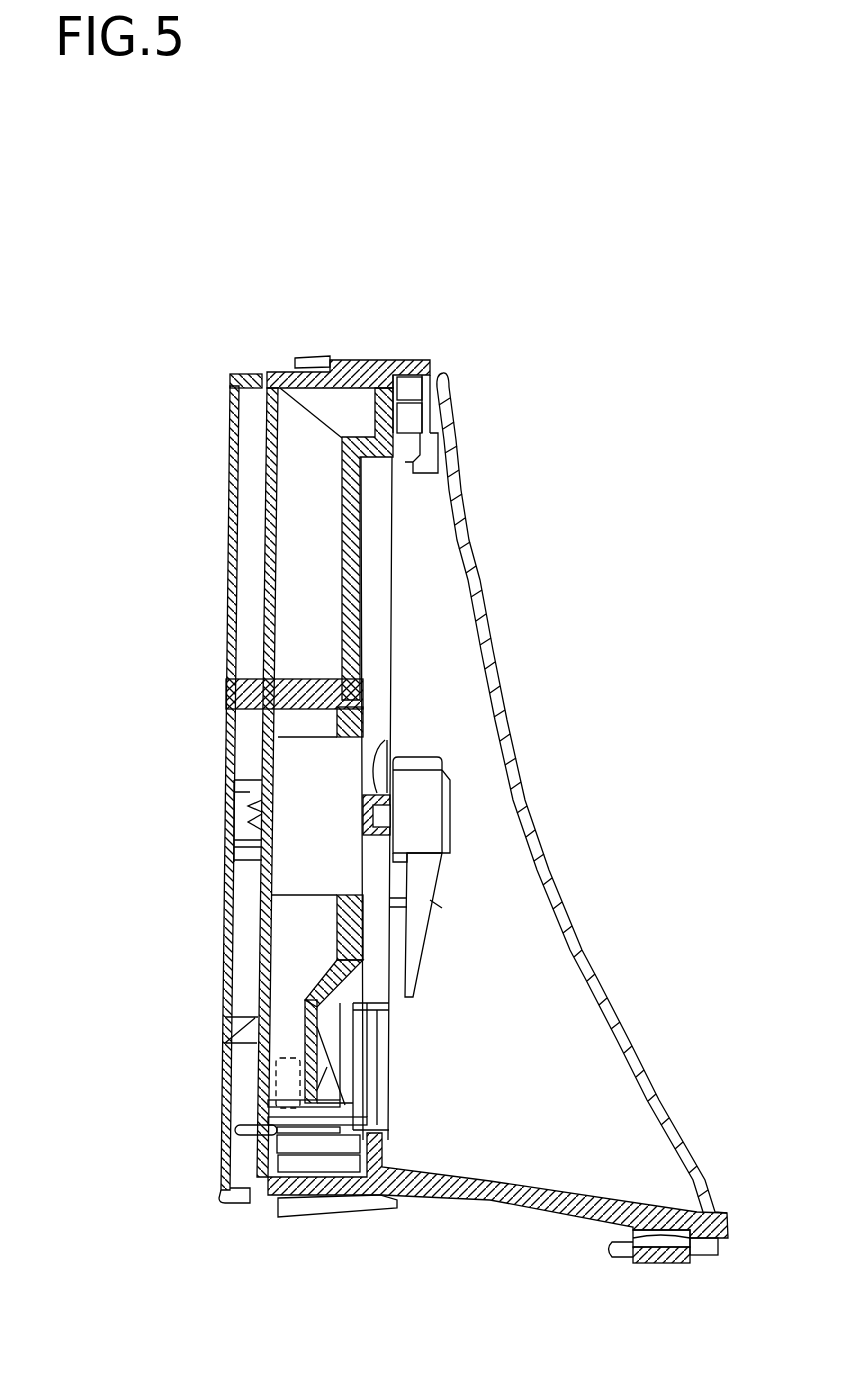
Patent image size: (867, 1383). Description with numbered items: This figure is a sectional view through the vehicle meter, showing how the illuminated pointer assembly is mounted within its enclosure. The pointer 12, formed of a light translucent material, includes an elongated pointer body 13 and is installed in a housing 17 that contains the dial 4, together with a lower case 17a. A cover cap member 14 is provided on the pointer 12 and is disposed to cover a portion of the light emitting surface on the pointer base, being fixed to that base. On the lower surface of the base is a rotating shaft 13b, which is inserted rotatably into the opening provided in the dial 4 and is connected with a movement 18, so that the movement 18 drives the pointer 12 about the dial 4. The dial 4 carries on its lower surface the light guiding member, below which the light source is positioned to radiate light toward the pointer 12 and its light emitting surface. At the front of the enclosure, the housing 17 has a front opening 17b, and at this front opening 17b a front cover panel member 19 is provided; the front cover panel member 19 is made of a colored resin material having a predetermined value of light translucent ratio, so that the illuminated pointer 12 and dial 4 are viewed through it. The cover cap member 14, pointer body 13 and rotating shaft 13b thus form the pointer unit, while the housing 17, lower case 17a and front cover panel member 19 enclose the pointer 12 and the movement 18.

The dial 4 is at (392, 587).
The pointer 12 is at (535, 867).
The pointer body 13 is at (447, 870).
The rotating shaft 13b is at (374, 795).
The cover cap member 14 is at (450, 797).
The housing 17 is at (383, 352).
The lower case 17a is at (346, 530).
The front opening 17b is at (692, 1208).
The movement 18 is at (303, 737).
The front cover panel member 19 is at (577, 934).